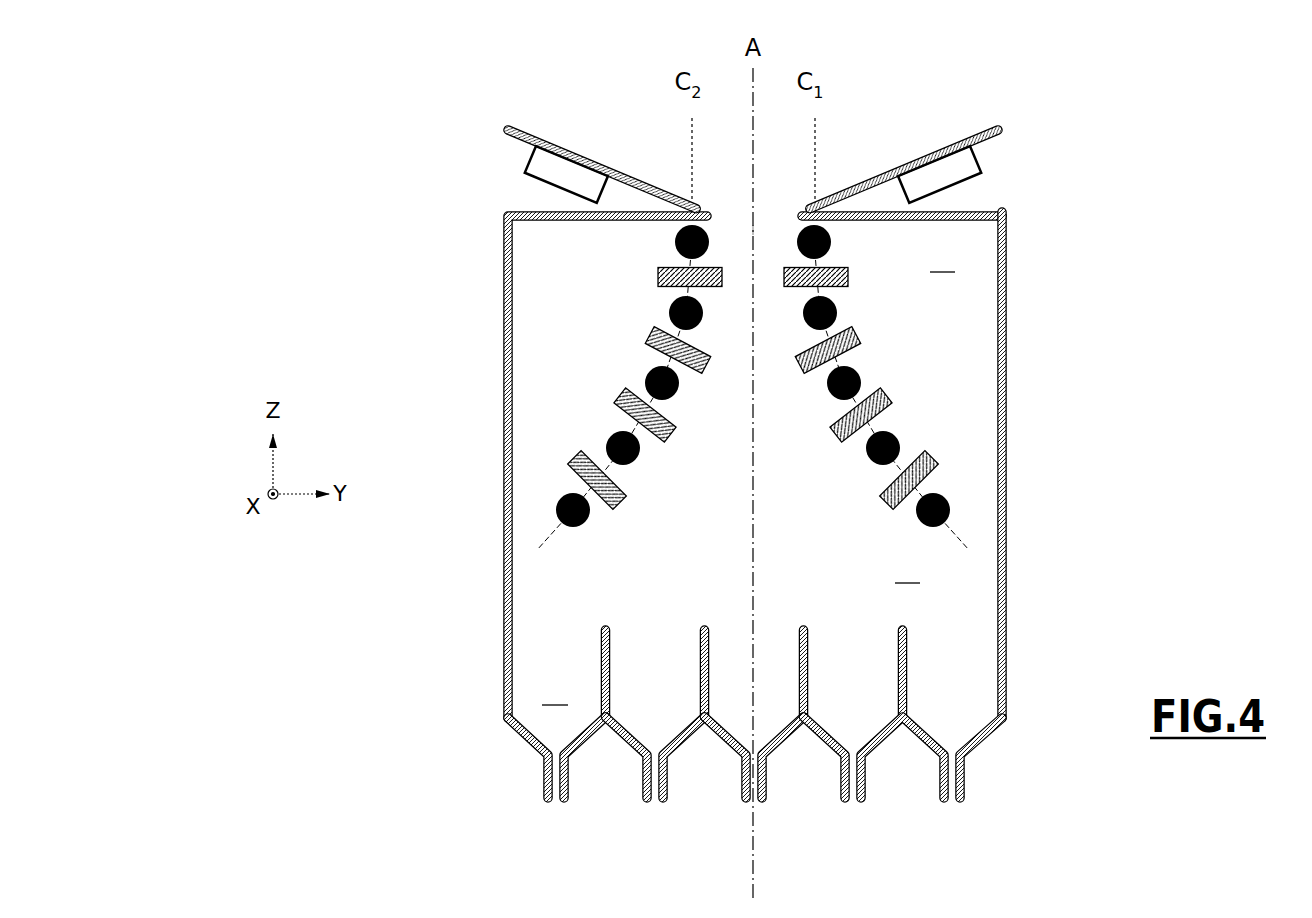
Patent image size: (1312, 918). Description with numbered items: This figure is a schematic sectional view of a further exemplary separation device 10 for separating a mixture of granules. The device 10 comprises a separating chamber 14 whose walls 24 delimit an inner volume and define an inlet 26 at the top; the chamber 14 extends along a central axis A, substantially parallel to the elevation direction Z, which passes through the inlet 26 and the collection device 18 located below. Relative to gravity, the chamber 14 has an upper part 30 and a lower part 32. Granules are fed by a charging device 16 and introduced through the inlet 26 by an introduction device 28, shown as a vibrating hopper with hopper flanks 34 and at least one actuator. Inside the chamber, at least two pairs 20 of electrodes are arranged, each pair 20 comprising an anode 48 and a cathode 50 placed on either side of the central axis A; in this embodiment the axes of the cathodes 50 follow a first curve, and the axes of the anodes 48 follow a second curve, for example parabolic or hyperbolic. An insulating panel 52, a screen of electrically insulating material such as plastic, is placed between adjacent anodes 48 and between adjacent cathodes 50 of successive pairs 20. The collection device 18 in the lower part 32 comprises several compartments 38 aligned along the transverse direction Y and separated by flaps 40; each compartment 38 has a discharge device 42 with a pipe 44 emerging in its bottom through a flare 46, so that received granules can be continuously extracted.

The separation device 10 is at (1198, 162).
The separating chamber 14 is at (1008, 479).
The charging device 16 is at (956, 120).
The collection device 18 is at (768, 706).
The pair of electrodes 20 is at (855, 465).
The walls 24 is at (1006, 298).
The inlet 26 is at (767, 238).
The introduction device 28 is at (895, 110).
The upper part 30 is at (940, 254).
The lower part 32 is at (907, 566).
The hopper flanks 34 is at (515, 133).
The compartments 38 is at (555, 689).
The flaps 40 is at (610, 648).
The discharge device 42 is at (640, 760).
The pipe 44 is at (545, 777).
The flare 46 is at (515, 740).
The anode 48 is at (583, 528).
The cathode 50 is at (920, 518).
The insulating panel 52 is at (940, 458).